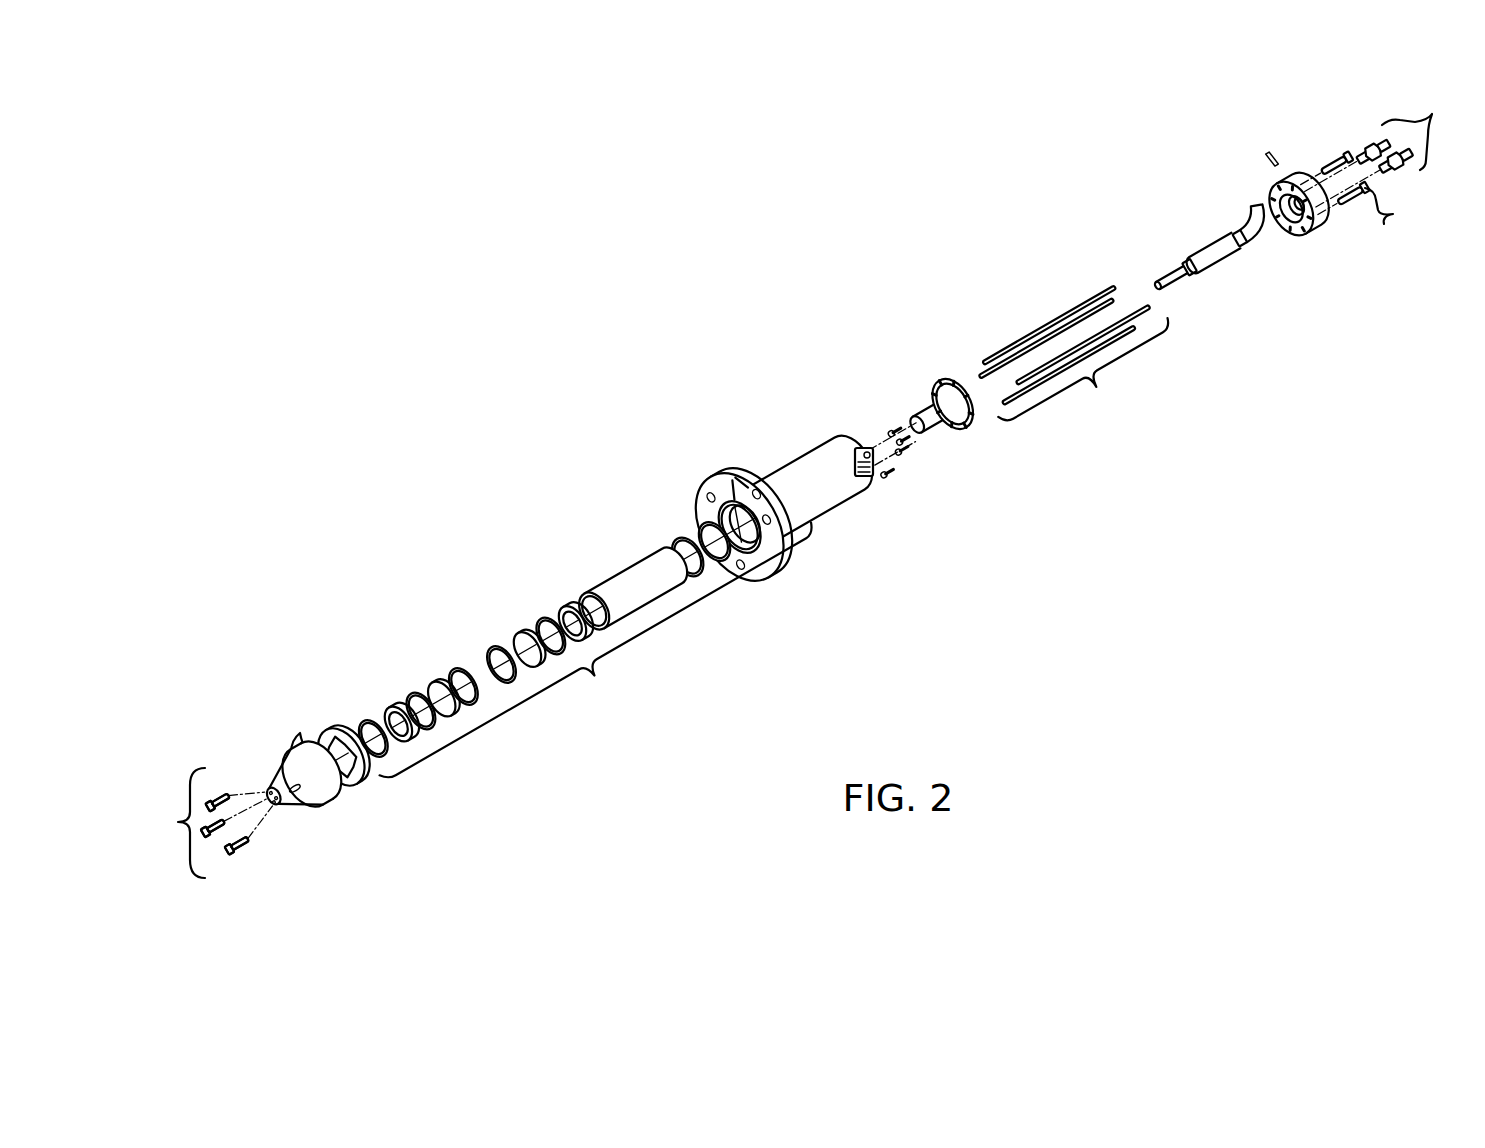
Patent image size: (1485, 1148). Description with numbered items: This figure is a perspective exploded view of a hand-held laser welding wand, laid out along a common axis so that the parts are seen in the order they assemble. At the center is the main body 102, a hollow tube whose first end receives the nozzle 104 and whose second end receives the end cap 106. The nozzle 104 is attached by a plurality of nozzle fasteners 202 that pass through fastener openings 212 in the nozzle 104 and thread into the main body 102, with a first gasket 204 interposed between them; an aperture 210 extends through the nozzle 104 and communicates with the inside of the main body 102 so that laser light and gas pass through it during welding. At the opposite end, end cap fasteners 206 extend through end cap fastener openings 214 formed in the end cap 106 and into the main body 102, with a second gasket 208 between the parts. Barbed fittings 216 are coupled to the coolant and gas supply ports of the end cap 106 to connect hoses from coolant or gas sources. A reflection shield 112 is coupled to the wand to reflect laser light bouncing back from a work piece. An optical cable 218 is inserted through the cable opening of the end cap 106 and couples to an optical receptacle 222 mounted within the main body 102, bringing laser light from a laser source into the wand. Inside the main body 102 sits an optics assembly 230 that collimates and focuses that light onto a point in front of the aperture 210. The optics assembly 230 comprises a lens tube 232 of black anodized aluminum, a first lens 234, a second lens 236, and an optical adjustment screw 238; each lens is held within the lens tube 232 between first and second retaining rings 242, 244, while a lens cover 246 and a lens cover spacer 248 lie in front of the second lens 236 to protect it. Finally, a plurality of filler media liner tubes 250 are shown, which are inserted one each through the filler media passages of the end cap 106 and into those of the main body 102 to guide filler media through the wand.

The main body 102 is at (793, 468).
The nozzle 104 is at (290, 762).
The end cap 106 is at (1296, 182).
The reflection shield 112 is at (788, 552).
The nozzle fastener 202 is at (184, 823).
The first gasket 204 is at (355, 788).
The end cap fastener 206 is at (1381, 187).
The second gasket 208 is at (966, 432).
The aperture 210 is at (282, 812).
The fastener openings 212 is at (300, 736).
The end cap fastener openings 214 is at (1283, 194).
The barbed fitting 216 is at (1412, 137).
The optical cable 218 is at (1188, 253).
The optical receptacle 222 is at (858, 446).
The optics assembly 230 is at (588, 635).
The lens tube 232 is at (620, 577).
The first lens 234 is at (517, 633).
The second lens 236 is at (443, 677).
The optical adjustment screw 238 is at (567, 603).
The first retaining ring 242 is at (357, 726).
The second retaining ring 244 is at (460, 687).
The lens cover 246 is at (395, 727).
The lens cover spacer 248 is at (417, 698).
The filler media liner tubes 250 is at (1074, 353).